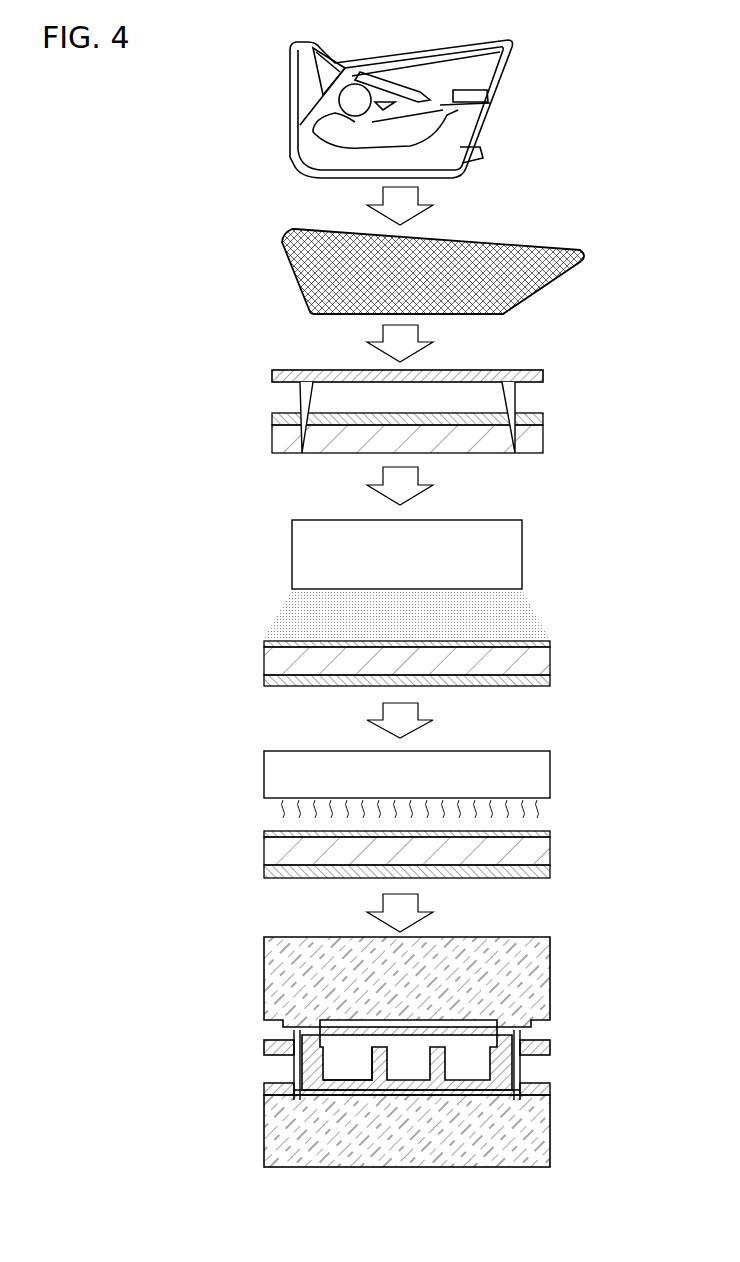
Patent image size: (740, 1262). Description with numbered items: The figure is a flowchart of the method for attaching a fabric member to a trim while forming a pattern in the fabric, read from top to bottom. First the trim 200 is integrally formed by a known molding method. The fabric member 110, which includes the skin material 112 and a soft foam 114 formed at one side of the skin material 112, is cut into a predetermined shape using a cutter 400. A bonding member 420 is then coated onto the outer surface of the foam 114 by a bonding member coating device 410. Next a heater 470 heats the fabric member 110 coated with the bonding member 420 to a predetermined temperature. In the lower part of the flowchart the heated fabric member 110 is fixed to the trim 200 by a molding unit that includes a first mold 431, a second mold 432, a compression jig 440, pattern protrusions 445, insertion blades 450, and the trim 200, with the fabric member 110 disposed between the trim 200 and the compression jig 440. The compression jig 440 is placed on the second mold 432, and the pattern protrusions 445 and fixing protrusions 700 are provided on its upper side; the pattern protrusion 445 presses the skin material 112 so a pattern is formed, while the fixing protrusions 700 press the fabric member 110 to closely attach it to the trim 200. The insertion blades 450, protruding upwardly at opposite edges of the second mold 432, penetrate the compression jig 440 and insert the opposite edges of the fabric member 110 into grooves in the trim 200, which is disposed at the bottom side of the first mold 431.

The trim 200 is at (293, 103).
The fabric member 110 is at (297, 270).
The skin material 112 is at (537, 416).
The soft foam 114 is at (537, 445).
The cutter 400 is at (272, 378).
The bonding member coating device 410 is at (302, 548).
The bonding member 420 is at (266, 644).
The heater 470 is at (266, 774).
The first mold 431 is at (541, 973).
The second mold 432 is at (541, 1157).
The compression jig 440 is at (548, 1088).
The pattern protrusions 445 is at (358, 1065).
The insertion blades 450 is at (296, 1070).
The fixing protrusions 700 is at (503, 1065).